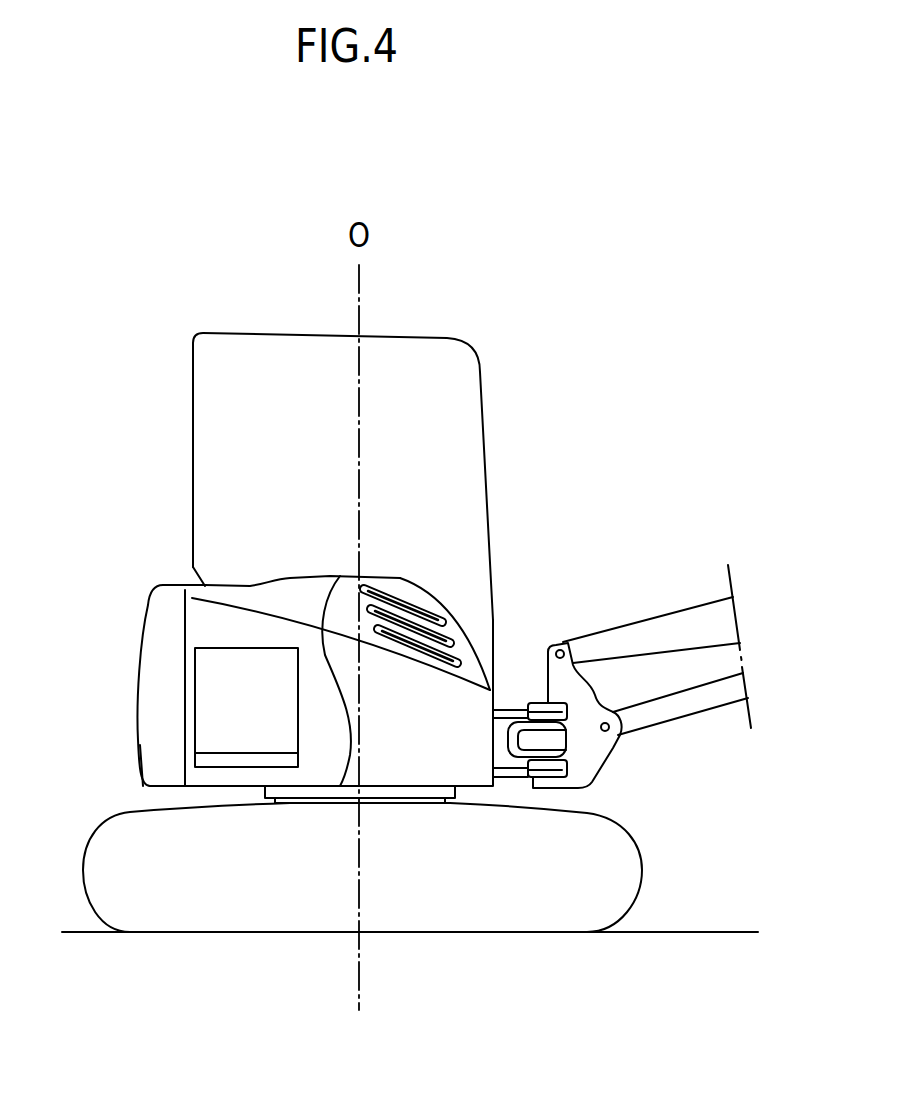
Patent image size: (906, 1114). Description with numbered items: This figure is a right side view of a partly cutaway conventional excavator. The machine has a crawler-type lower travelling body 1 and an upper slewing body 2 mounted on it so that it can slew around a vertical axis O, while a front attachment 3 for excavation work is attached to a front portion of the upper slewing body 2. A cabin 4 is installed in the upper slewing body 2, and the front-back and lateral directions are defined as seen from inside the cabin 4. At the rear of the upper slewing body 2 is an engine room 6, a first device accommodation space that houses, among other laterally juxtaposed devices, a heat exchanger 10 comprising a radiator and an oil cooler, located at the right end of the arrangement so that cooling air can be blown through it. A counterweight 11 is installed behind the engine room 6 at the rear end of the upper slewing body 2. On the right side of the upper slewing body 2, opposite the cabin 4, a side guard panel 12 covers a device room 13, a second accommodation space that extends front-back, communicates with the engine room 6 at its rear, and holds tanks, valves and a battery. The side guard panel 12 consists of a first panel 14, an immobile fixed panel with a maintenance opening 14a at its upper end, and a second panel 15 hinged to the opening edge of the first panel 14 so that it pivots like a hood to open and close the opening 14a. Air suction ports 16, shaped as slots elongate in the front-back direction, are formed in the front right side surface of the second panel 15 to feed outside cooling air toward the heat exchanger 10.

The lower travelling body 1 is at (443, 938).
The upper slewing body 2 is at (403, 332).
The front attachment 3 is at (709, 722).
The cabin 4 is at (207, 436).
The engine room 6 is at (197, 632).
The heat exchanger 10 is at (205, 672).
The counterweight 11 is at (143, 752).
The side guard panel 12 is at (590, 487).
The device room 13 is at (327, 757).
The first panel 14 is at (473, 717).
The opening 14a is at (290, 626).
The second panel 15 is at (453, 603).
The air suction ports 16 is at (413, 628).